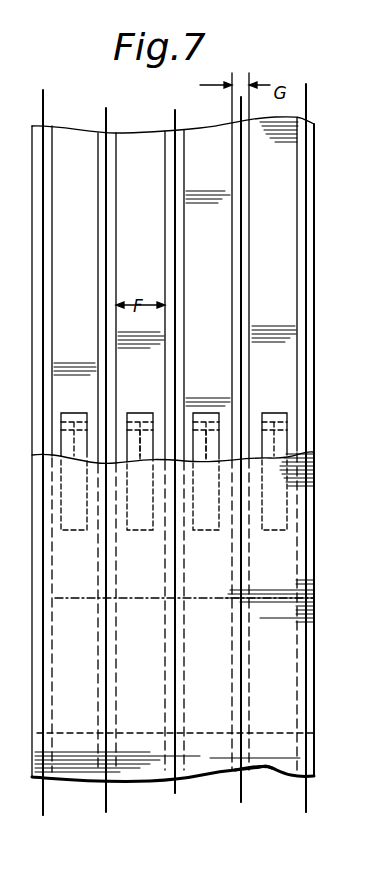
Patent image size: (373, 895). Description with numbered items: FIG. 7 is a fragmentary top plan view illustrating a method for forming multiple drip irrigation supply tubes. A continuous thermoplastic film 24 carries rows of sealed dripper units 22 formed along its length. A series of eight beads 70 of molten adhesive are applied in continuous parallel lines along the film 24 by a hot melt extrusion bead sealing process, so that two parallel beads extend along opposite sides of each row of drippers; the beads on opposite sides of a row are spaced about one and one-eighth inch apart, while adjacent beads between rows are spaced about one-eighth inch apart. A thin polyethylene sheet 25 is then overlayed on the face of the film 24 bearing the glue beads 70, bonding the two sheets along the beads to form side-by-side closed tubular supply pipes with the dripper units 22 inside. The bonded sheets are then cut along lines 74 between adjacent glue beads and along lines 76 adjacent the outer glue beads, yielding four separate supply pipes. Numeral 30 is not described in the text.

The film 24 is at (124, 153).
The beads of molten adhesive 70 is at (52, 263).
The tabs 30 is at (137, 443).
The dripper units 22 is at (190, 440).
The lines 74 is at (175, 793).
The lines 76 is at (43, 803).
The sheet 25 is at (269, 768).